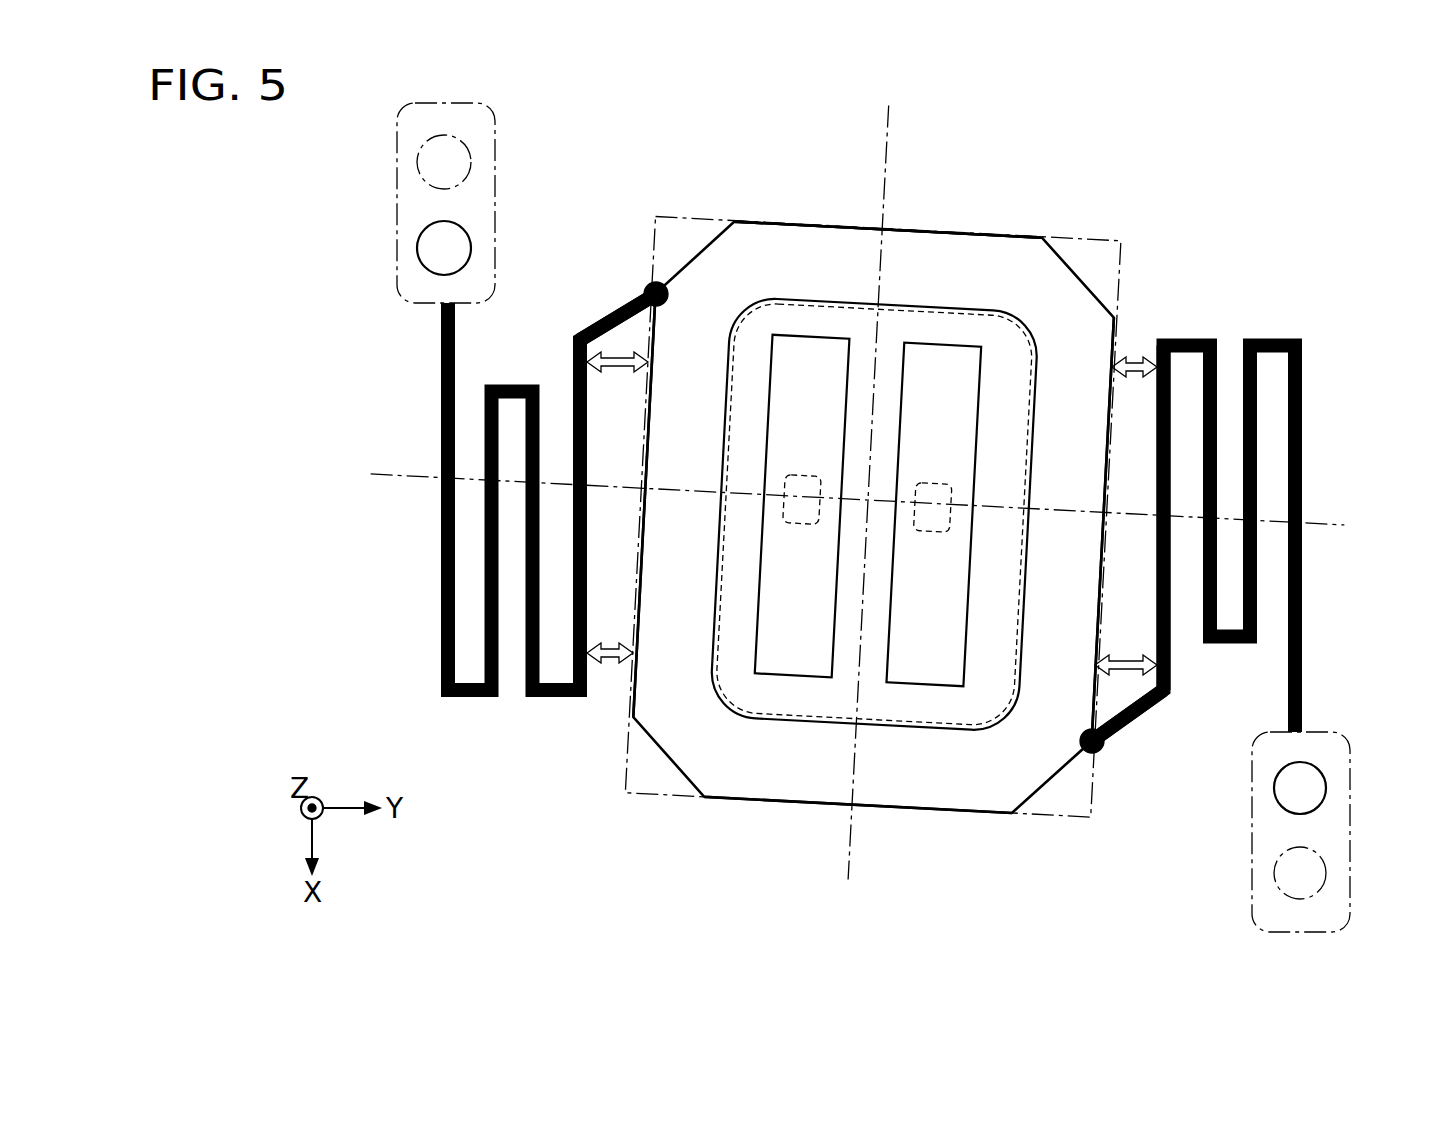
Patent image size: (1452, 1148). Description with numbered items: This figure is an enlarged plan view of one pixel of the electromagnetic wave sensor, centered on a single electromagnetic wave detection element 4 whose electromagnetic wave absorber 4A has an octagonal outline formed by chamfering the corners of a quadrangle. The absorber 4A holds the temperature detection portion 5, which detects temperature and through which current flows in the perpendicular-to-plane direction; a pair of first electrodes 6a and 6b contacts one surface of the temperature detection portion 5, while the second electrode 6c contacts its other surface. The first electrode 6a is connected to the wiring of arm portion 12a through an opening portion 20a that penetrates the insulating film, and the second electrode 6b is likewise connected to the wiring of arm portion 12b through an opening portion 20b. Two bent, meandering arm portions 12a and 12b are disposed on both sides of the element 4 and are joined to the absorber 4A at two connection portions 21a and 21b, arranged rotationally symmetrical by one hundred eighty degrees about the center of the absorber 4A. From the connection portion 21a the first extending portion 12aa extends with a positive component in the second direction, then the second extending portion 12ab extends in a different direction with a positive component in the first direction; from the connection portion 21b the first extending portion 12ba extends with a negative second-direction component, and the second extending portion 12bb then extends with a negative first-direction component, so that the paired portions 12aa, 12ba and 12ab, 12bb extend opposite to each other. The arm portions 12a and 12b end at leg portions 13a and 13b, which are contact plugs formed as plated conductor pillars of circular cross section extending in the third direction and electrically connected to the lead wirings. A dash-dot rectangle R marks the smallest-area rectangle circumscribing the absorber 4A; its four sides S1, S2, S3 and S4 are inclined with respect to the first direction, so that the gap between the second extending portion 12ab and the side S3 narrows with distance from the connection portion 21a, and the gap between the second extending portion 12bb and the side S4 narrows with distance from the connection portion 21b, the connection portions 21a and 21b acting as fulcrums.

The electromagnetic wave detection element 4 is at (797, 207).
The electromagnetic wave absorber 4A is at (749, 221).
The temperature detection portion 5 is at (977, 308).
The first electrode 6a is at (938, 373).
The second electrode 6b is at (817, 358).
The second electrode 6c is at (813, 300).
The arm portion 12a is at (1230, 320).
The first extending portion 12aa is at (1140, 712).
The second extending portion 12ab is at (1170, 617).
The arm portion 12b is at (515, 708).
The first extending portion 12ba is at (607, 312).
The second extending portion 12bb is at (573, 453).
The leg portion 13a is at (1328, 788).
The leg portion 13b is at (420, 243).
The opening portion 20a is at (927, 512).
The opening portion 20b is at (800, 508).
The connection portion 21a is at (1097, 753).
The connection portion 21b is at (648, 284).
The rectangle R is at (664, 218).
The side S1 is at (708, 218).
The side S2 is at (675, 798).
The side S3 is at (1108, 448).
The side S4 is at (642, 423).